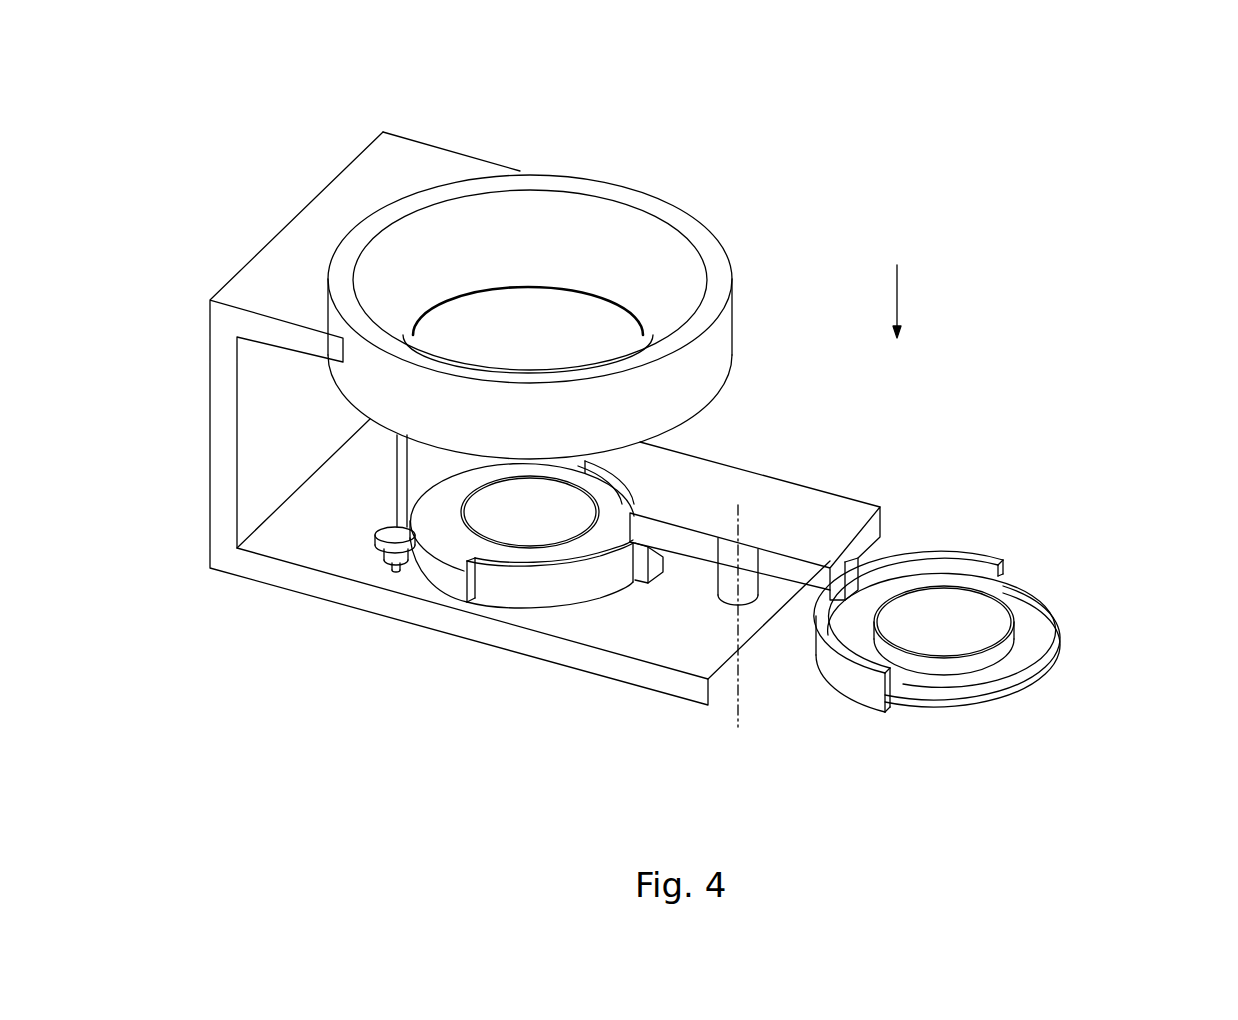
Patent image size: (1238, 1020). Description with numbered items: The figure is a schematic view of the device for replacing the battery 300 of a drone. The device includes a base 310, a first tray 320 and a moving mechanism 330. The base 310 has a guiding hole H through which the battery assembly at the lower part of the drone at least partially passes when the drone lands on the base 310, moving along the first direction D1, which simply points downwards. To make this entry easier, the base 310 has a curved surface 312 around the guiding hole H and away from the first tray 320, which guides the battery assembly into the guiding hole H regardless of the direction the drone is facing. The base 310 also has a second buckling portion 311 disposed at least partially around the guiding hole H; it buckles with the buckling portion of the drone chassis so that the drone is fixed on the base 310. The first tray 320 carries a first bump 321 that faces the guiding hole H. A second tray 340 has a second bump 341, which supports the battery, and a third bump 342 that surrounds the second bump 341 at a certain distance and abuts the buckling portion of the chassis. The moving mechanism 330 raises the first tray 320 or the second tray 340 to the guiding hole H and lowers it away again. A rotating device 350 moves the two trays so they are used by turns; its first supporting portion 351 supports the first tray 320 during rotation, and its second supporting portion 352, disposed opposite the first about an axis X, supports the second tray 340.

The device for replacing the battery 300 is at (184, 64).
The base 310 is at (262, 410).
The second buckling portion 311 is at (520, 287).
The curved surface 312 is at (580, 220).
The guiding hole H is at (577, 308).
The first tray 320 is at (453, 570).
The first bump 321 is at (483, 512).
The moving mechanism 330 is at (400, 497).
The second tray 340 is at (1030, 628).
The second bump 341 is at (973, 612).
The third bump 342 is at (1058, 662).
The rotating device 350 is at (767, 563).
The first supporting portion 351 is at (623, 480).
The second supporting portion 352 is at (958, 555).
The first direction D1 is at (918, 301).
The axis X is at (737, 632).